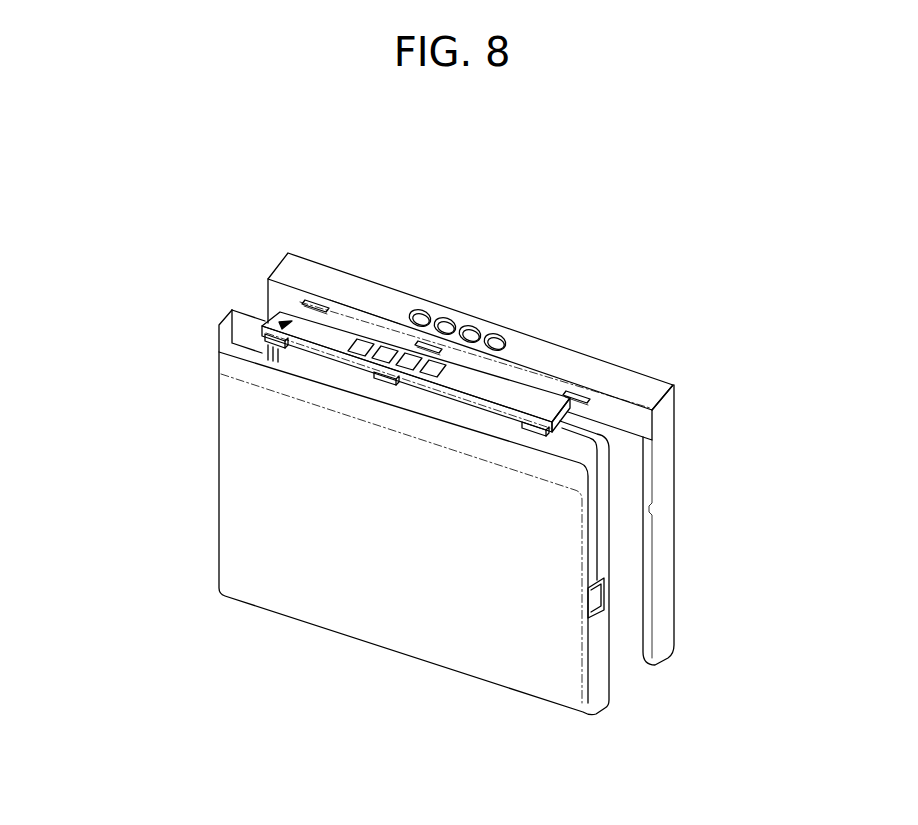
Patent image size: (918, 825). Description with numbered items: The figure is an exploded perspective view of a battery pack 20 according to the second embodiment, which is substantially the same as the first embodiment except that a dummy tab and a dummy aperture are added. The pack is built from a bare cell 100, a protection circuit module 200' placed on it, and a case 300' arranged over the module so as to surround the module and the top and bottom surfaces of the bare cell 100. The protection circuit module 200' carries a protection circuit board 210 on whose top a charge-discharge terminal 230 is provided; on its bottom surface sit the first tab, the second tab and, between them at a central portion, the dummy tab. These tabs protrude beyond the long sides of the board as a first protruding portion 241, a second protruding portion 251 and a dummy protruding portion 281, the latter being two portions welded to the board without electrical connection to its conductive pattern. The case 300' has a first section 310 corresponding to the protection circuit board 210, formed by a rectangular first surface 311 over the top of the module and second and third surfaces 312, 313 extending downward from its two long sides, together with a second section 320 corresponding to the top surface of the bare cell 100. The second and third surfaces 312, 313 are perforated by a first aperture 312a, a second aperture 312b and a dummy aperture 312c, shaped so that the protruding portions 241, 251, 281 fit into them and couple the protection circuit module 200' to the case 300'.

The battery pack 20 is at (214, 162).
The bare cell 100 is at (375, 637).
The protection circuit module 200' is at (229, 319).
The protection circuit board 210 is at (462, 385).
The charge-discharge terminal 230 is at (360, 363).
The first protruding portion 241 is at (528, 432).
The second protruding portion 251 is at (268, 348).
The dummy protruding portion 281 is at (385, 385).
The case 300' is at (498, 346).
The first section 310 is at (400, 203).
The first surface 311 is at (412, 296).
The second surface 312 is at (363, 322).
The third surface 313 is at (477, 300).
The first aperture 312a is at (583, 390).
The second aperture 312b is at (300, 301).
The dummy aperture 312c is at (500, 327).
The second section 320 is at (655, 486).